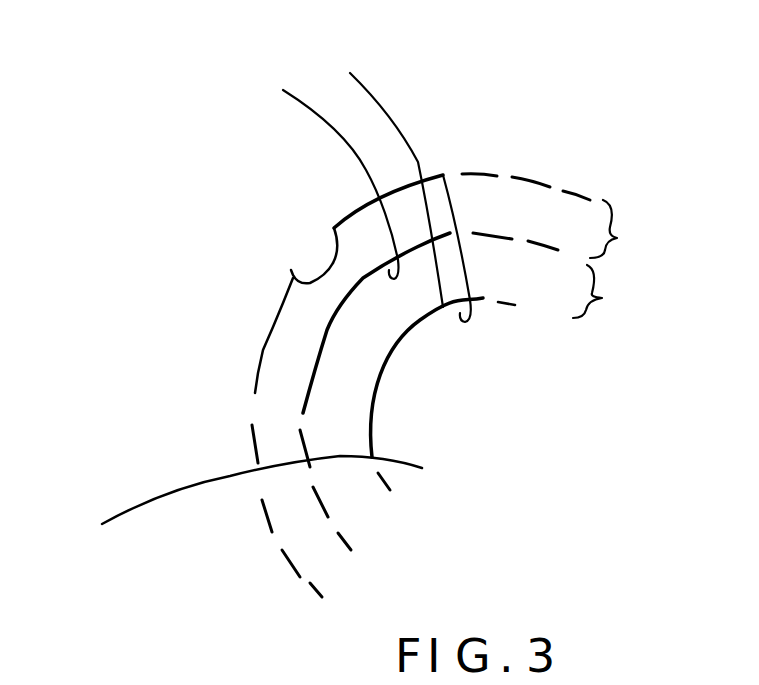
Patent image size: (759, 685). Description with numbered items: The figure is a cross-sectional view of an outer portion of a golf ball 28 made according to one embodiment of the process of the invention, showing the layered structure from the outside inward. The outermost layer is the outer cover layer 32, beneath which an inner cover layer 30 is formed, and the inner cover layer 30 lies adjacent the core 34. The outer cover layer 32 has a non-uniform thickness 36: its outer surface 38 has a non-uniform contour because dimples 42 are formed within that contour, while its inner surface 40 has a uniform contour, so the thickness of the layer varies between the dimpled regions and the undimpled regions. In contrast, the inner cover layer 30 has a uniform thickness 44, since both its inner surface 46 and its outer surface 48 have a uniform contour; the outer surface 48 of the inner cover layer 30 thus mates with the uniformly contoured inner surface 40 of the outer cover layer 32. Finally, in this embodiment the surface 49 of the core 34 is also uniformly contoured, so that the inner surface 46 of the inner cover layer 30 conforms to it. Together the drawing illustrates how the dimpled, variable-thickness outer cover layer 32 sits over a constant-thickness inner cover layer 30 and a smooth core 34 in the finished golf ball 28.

The golf ball 28 is at (497, 140).
The inner cover layer 30 is at (338, 425).
The outer cover layer 32 is at (287, 353).
The core 34 is at (238, 504).
The non-uniform thickness 36 is at (488, 306).
The outer surface 38 is at (283, 302).
The inner surface 40 is at (333, 233).
The dimples 42 is at (317, 267).
The uniform thickness 44 is at (517, 361).
The inner surface 46 is at (323, 164).
The outer surface 48 is at (370, 272).
The surface 49 is at (389, 170).